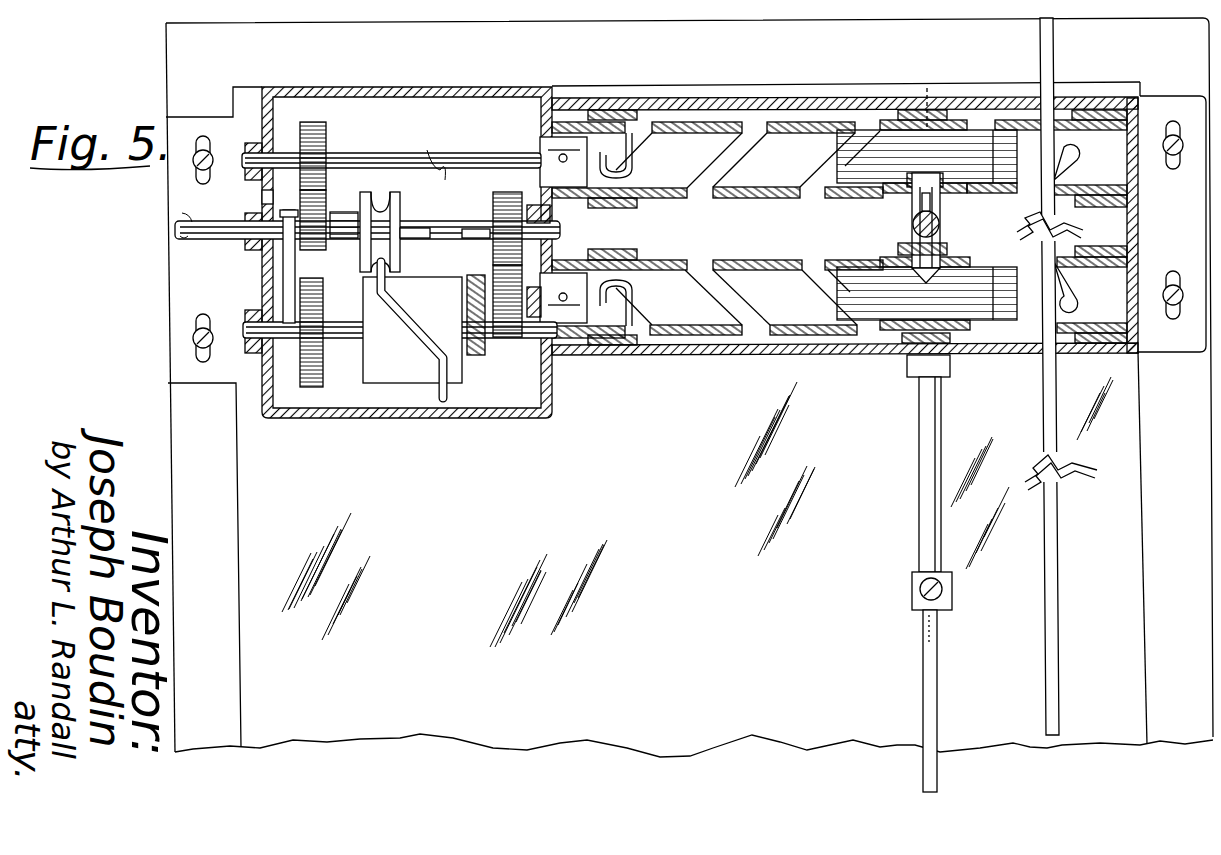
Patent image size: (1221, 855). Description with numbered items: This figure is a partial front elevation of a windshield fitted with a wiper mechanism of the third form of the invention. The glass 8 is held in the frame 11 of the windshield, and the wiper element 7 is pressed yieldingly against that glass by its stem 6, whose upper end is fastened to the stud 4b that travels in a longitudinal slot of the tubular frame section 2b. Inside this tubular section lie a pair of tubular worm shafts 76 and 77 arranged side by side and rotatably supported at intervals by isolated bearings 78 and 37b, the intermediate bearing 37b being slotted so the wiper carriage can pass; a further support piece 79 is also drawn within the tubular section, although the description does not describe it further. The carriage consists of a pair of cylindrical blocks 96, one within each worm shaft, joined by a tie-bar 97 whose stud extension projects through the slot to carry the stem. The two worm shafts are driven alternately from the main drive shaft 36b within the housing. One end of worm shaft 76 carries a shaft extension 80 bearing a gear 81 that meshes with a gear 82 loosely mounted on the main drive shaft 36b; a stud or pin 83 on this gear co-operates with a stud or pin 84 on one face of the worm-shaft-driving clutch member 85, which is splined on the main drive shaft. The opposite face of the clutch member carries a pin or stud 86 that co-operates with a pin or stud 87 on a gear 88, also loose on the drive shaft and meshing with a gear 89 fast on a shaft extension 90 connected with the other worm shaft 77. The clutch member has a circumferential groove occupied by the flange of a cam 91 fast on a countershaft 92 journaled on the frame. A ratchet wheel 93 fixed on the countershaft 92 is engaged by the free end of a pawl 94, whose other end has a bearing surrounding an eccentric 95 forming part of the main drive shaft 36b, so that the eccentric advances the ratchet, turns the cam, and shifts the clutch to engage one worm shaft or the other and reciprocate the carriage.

The tubular frame section 2b is at (924, 84).
The stud 4b is at (493, 413).
The stem 6 is at (927, 437).
The wiper element 7 is at (923, 648).
The glass 8 is at (697, 512).
The frame of the windshield 11 is at (1147, 552).
The main drive shaft 36b is at (413, 228).
The intermediate bearing 37b is at (948, 207).
The tubular worm shaft 76 is at (803, 333).
The tubular worm shaft 77 is at (798, 123).
The bearing 78 is at (1099, 247).
The block 79 is at (612, 208).
The shaft extension 80 is at (572, 315).
The gear 81 is at (513, 327).
The gear 82 is at (508, 193).
The stud or pin 83 is at (475, 232).
The stud or pin 84 is at (410, 240).
The worm-shaft-driving clutch member 85 is at (393, 193).
The pin or stud 86 is at (366, 207).
The pin or stud 87 is at (342, 222).
The gear 88 is at (310, 223).
The gear 89 is at (310, 133).
The shaft extension 90 is at (478, 153).
The cam 91 is at (443, 397).
The countershaft 92 is at (342, 336).
The ratchet wheel 93 is at (313, 387).
The pawl 94 is at (287, 280).
The eccentric 95 is at (278, 200).
The cylindrical block 96 is at (893, 153).
The tie-bar 97 is at (910, 213).